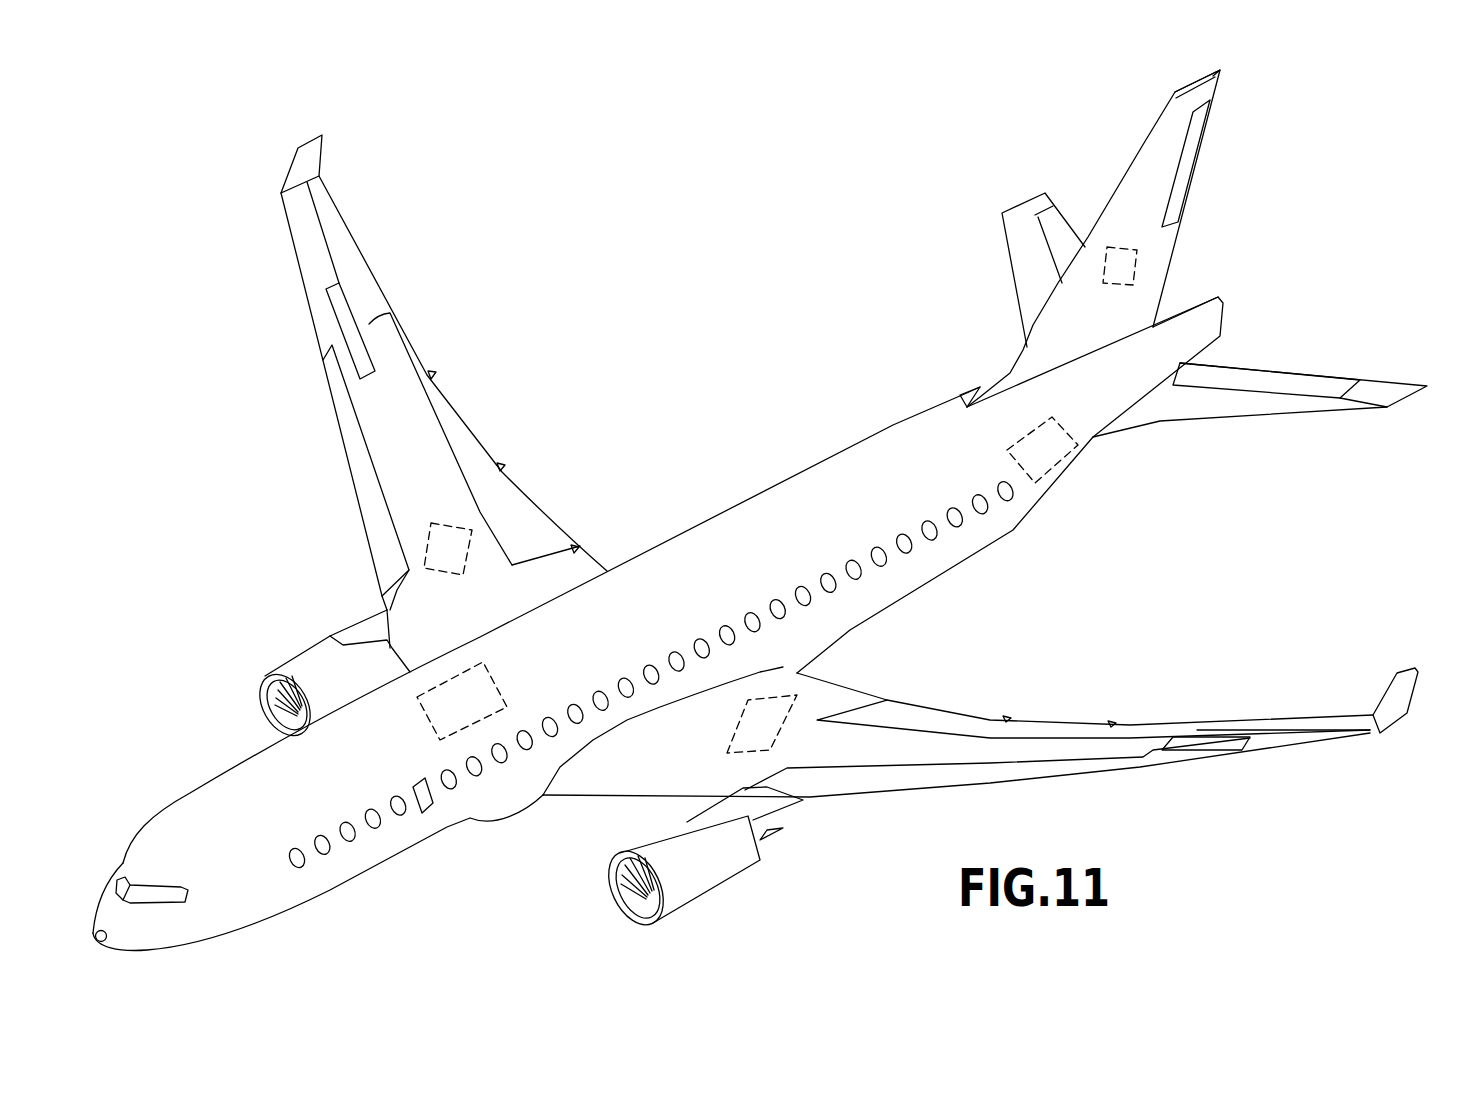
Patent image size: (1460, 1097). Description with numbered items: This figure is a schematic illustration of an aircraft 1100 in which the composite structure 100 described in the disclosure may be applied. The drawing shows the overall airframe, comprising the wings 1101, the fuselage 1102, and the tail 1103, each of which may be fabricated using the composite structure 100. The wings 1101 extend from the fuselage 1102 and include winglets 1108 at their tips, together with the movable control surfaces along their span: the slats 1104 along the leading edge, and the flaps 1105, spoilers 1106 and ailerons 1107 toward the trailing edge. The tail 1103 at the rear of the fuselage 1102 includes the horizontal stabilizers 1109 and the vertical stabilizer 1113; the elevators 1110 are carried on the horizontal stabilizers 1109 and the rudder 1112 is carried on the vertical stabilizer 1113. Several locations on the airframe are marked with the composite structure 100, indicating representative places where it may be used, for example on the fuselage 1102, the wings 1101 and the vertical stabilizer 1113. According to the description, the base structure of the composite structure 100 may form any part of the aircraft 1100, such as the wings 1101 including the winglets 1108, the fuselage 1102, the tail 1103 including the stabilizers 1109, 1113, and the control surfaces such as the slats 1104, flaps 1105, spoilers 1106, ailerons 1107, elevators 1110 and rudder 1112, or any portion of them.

The composite structure 100 is at (433, 522).
The aircraft 1100 is at (237, 412).
The wings 1101 is at (306, 270).
The fuselage 1102 is at (683, 535).
The tail 1103 is at (1130, 173).
The slats 1104 is at (362, 493).
The flaps 1105 is at (446, 412).
The spoilers 1106 is at (339, 313).
The ailerons 1107 is at (369, 274).
The winglets 1108 is at (320, 135).
The horizontal stabilizers 1109 is at (1013, 283).
The elevators 1110 is at (1045, 218).
The rudder 1112 is at (1197, 147).
The vertical stabilizer 1113 is at (1205, 78).